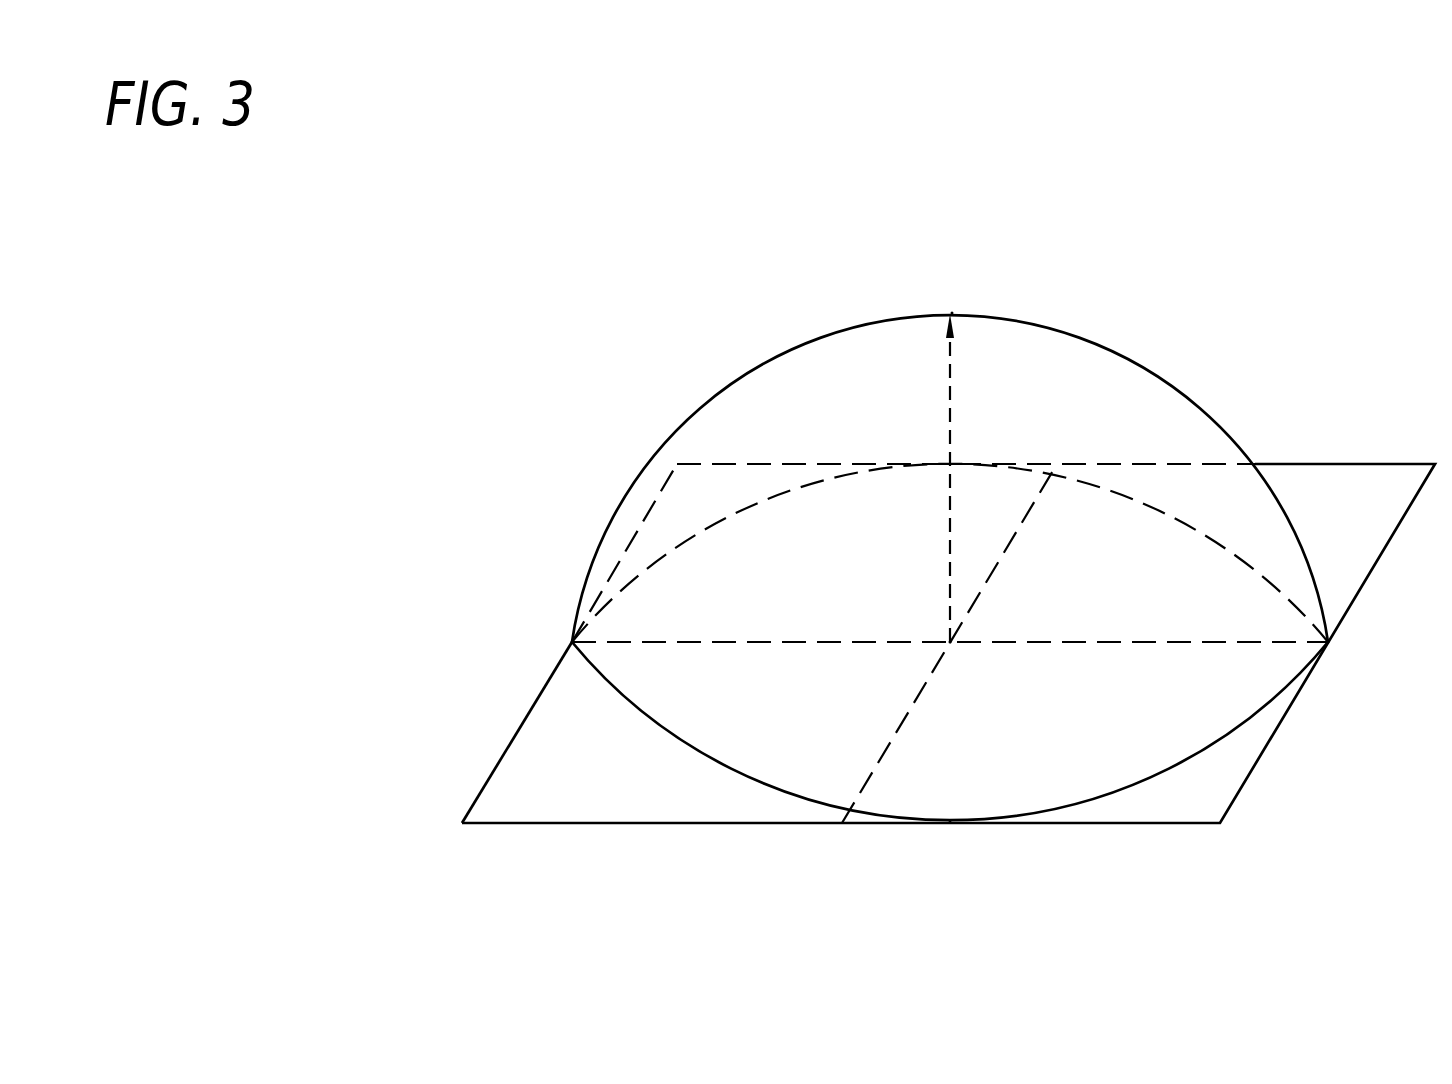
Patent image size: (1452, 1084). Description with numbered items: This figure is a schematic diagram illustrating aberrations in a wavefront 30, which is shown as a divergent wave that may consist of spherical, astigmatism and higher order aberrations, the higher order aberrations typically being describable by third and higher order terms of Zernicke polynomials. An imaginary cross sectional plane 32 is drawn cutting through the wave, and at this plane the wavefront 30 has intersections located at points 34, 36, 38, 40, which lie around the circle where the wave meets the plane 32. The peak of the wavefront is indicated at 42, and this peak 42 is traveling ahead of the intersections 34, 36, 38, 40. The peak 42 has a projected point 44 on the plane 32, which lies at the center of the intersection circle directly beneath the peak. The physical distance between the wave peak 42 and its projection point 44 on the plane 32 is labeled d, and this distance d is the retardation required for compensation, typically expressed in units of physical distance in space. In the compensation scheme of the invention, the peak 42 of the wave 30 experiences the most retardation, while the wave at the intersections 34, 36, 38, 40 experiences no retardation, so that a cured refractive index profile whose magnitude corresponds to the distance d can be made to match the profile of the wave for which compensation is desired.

The wavefront 30 is at (807, 365).
The cross sectional plane 32 is at (1337, 498).
The intersection point 34 is at (1003, 464).
The intersection point 36 is at (1328, 641).
The intersection point 38 is at (950, 823).
The intersection point 40 is at (572, 642).
The peak of the wavefront 42 is at (953, 312).
The projected point 44 is at (950, 642).
The retardation distance d is at (953, 412).